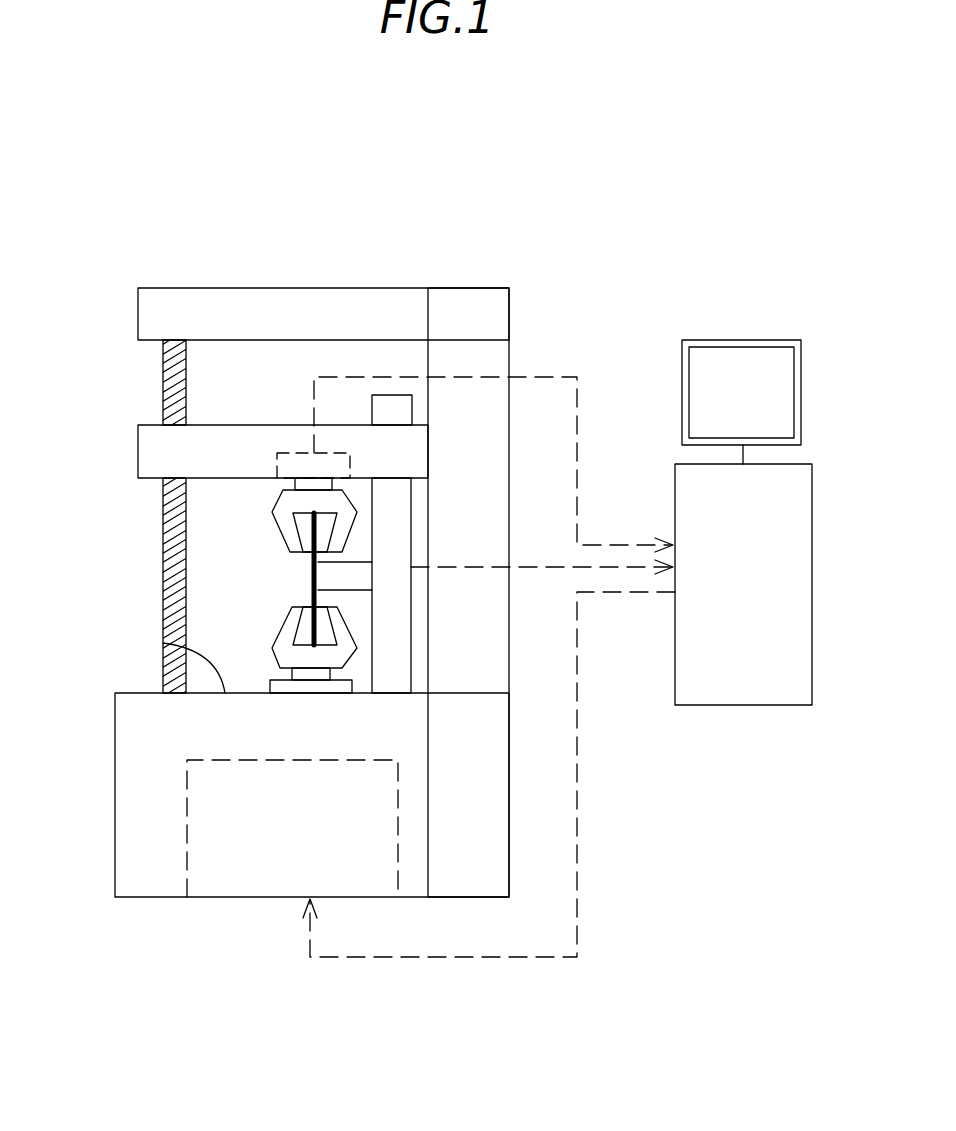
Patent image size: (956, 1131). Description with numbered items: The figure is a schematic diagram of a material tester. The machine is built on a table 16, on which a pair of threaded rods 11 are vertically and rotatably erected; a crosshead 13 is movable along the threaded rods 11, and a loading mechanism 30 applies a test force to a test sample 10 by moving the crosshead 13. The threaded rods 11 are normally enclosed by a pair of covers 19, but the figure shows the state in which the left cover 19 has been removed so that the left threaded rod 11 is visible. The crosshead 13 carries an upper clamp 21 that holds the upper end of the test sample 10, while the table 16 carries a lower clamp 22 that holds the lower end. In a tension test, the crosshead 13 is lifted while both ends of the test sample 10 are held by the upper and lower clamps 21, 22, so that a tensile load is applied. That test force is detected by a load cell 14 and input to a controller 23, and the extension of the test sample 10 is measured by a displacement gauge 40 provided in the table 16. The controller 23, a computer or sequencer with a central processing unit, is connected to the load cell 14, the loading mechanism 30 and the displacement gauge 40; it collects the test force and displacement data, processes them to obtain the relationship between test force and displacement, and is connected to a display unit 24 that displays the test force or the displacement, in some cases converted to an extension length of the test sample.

The test sample 10 is at (312, 573).
The threaded rods 11 is at (168, 372).
The crosshead 13 is at (157, 452).
The load cell 14 is at (275, 460).
The table 16 is at (163, 643).
The cover 19 is at (487, 318).
The upper clamp 21 is at (287, 513).
The lower clamp 22 is at (285, 645).
The controller 23 is at (738, 676).
The display unit 24 is at (733, 362).
The loading mechanism 30 is at (218, 825).
The displacement gauge 40 is at (392, 410).